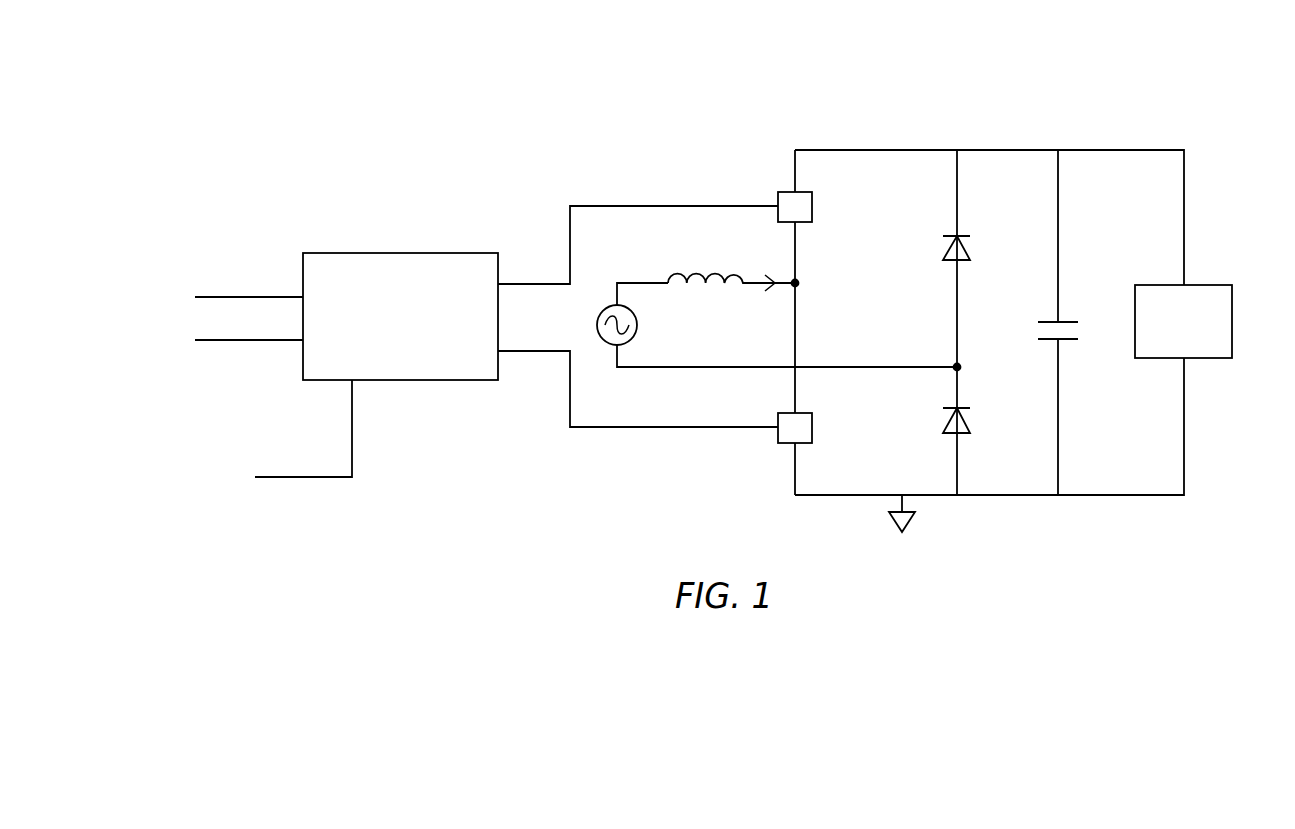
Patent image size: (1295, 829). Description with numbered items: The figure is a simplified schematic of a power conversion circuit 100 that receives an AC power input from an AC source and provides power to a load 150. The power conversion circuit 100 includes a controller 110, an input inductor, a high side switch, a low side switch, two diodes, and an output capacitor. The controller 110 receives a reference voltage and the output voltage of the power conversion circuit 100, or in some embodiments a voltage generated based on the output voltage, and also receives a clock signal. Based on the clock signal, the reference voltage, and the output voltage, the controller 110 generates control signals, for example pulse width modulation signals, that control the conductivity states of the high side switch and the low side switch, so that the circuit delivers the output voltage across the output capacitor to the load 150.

The power conversion circuit 100 is at (295, 57).
The controller 110 is at (372, 253).
The load 150 is at (1210, 285).